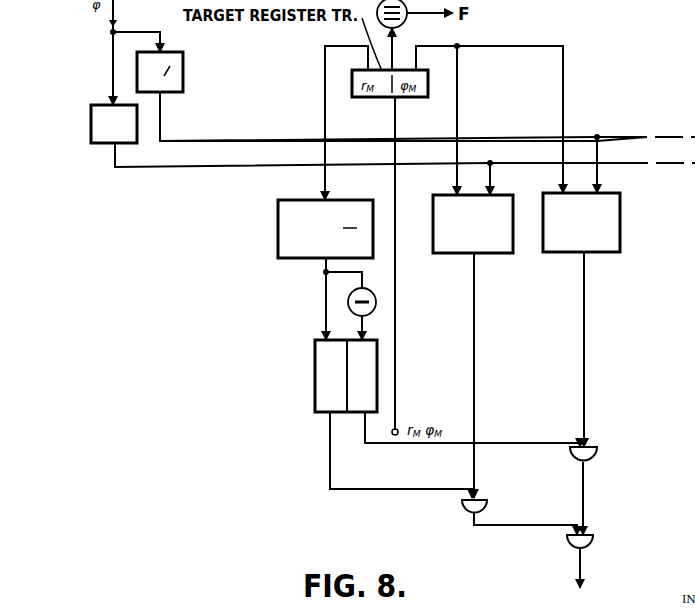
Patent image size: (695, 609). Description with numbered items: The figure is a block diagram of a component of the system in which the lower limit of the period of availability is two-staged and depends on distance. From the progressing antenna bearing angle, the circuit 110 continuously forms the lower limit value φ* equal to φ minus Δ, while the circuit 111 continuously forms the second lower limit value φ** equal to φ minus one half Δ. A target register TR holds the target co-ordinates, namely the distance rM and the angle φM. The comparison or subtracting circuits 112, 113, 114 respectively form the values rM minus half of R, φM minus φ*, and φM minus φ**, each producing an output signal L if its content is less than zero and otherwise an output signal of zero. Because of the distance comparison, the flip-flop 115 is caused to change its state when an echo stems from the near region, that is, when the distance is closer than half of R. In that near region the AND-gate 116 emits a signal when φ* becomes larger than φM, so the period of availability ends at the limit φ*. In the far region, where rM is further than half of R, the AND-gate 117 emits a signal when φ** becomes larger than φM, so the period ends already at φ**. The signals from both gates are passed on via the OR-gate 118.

The circuit 110 is at (91, 131).
The circuit 111 is at (178, 58).
The comparison or subtracting circuit 112 is at (278, 237).
The comparison or subtracting circuit 113 is at (437, 234).
The comparison or subtracting circuit 114 is at (548, 234).
The flip-flop 115 is at (315, 383).
The AND-gate 116 is at (487, 505).
The AND-gate 117 is at (597, 455).
The OR-gate 118 is at (593, 543).